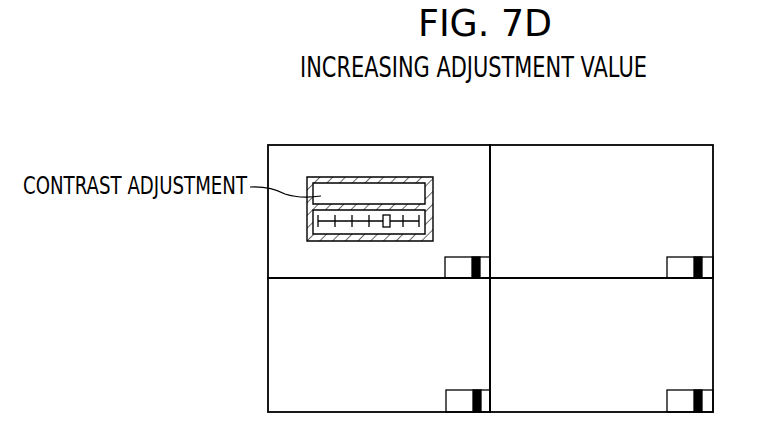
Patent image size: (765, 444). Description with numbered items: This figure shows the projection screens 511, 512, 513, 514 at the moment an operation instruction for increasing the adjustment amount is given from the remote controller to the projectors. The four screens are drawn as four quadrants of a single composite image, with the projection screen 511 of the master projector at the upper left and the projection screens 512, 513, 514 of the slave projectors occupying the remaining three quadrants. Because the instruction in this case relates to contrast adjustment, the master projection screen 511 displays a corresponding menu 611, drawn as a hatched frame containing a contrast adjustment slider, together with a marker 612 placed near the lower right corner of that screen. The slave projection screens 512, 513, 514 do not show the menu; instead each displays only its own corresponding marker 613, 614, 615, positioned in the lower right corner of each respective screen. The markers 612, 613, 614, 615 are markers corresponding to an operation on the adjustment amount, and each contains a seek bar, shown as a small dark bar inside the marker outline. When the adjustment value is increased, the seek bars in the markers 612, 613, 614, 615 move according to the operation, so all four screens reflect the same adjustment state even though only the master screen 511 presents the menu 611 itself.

The projection screen 511 is at (332, 146).
The projection screen 512 is at (384, 279).
The projection screen 513 is at (595, 279).
The projection screen 514 is at (598, 146).
The menu 611 is at (405, 177).
The marker 612 is at (476, 258).
The marker 613 is at (477, 391).
The marker 614 is at (698, 391).
The marker 615 is at (698, 258).